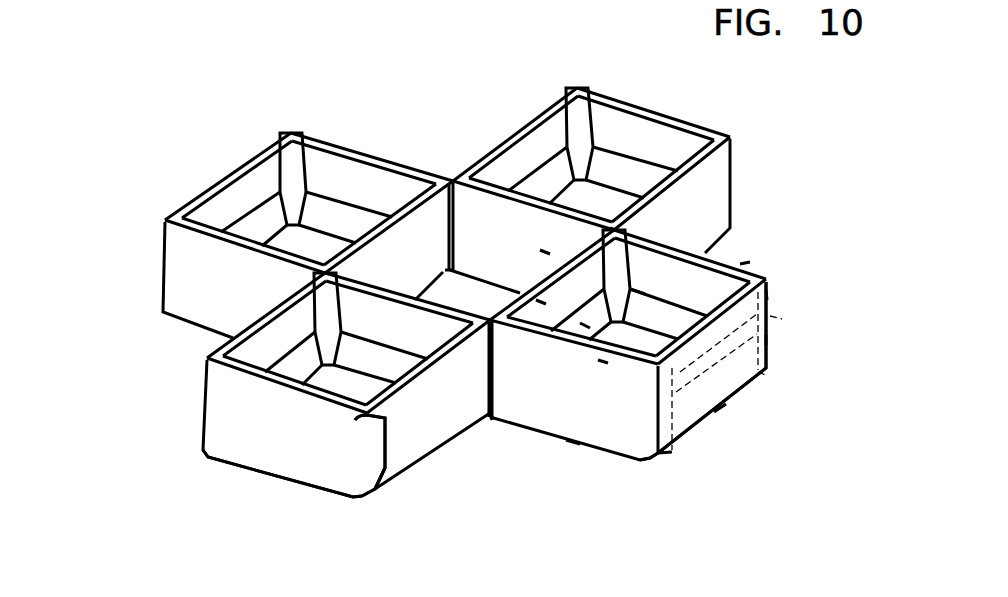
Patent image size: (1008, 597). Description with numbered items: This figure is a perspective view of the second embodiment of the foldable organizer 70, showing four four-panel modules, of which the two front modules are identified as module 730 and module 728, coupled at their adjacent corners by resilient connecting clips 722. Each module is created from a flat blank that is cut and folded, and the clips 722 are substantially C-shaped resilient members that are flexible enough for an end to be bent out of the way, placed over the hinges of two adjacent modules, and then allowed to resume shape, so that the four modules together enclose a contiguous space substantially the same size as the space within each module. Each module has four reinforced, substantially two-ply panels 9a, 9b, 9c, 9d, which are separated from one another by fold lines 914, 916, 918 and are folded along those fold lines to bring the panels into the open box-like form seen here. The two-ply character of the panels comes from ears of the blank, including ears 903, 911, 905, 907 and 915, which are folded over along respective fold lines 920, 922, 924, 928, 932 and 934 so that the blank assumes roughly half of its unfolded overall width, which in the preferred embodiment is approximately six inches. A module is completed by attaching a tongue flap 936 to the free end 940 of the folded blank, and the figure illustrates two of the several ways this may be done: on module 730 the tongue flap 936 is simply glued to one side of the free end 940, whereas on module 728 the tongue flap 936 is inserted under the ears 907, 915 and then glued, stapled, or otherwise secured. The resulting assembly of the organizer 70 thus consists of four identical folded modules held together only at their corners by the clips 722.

The foldable organizer 70 is at (126, 208).
The reinforced panel 9a is at (215, 295).
The reinforced panel 9b is at (222, 187).
The reinforced panel 9c is at (341, 147).
The reinforced panel 9d is at (718, 180).
The resilient connecting clip 722 is at (450, 178).
The fold line 924 is at (545, 250).
The fold line 916 is at (616, 230).
The fold line 928 is at (745, 262).
The fold line 932 is at (770, 295).
The ear 907 is at (780, 318).
The fold line 918 is at (773, 340).
The ear 915 is at (767, 377).
The ear 905 is at (693, 281).
The ear 903 is at (540, 303).
The ear 911 is at (584, 326).
The fold line 914 is at (492, 418).
The fold line 922 is at (573, 443).
The fold line 920 is at (603, 362).
The free end 940 is at (653, 453).
The tongue flap 936 is at (672, 445).
The fold line 934 is at (720, 413).
The 4-panel module 730 is at (262, 490).
The 4-panel module 728 is at (748, 480).